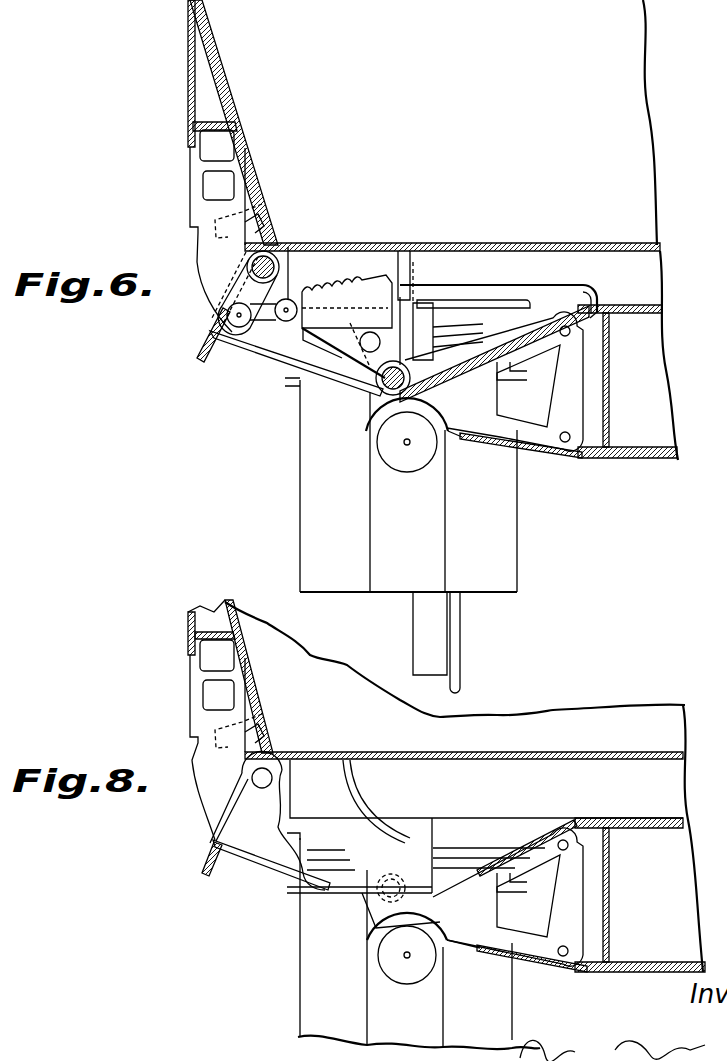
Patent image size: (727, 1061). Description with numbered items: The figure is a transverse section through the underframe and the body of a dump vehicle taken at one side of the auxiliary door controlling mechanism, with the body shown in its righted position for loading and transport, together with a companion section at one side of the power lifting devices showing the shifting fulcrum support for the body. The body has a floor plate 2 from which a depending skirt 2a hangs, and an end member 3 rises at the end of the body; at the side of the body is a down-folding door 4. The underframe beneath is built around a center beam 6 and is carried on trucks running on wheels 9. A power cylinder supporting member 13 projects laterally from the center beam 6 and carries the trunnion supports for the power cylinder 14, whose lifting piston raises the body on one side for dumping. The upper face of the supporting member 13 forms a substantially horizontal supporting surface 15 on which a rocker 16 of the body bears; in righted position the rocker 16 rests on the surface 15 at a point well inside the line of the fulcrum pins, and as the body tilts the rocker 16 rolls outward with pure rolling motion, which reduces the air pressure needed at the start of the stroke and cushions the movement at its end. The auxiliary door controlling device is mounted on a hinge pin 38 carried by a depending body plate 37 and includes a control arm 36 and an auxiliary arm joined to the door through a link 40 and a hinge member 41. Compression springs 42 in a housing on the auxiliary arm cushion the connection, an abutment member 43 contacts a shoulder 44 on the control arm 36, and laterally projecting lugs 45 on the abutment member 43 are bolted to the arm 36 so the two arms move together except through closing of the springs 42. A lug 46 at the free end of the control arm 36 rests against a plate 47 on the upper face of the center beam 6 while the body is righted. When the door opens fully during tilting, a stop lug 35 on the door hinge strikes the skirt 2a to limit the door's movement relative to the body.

In FIG. 6, the floor plate 2 is at (560, 243).
In FIG. 8, the floor plate 2 is at (519, 752).
In FIG. 6, the depending skirt 2a is at (205, 340).
In FIG. 8, the depending skirt 2a is at (210, 858).
In FIG. 6, the end member 3 is at (533, 122).
In FIG. 8, the end member 3 is at (464, 787).
In FIG. 6, the down-folding door 4 is at (225, 61).
In FIG. 8, the down-folding door 4 is at (235, 630).
In FIG. 6, the center beam 6 is at (616, 373).
In FIG. 8, the center beam 6 is at (611, 900).
In FIG. 6, the wheel 9 is at (436, 642).
In FIG. 6, the power cylinder supporting member 13 is at (494, 382).
In FIG. 8, the power cylinder supporting member 13 is at (510, 896).
In FIG. 6, the power cylinder 14 is at (498, 502).
In FIG. 8, the power cylinder 14 is at (313, 972).
In FIG. 8, the horizontal supporting surface 15 is at (366, 898).
In FIG. 6, the rocker 16 is at (313, 356).
In FIG. 8, the rocker 16 is at (376, 806).
In FIG. 6, the stop lug 35 is at (188, 232).
In FIG. 8, the stop lug 35 is at (190, 745).
In FIG. 6, the control arm 36 is at (492, 291).
In FIG. 6, the depending body plate 37 is at (303, 396).
In FIG. 8, the depending body plate 37 is at (283, 852).
In FIG. 6, the hinge pin 38 is at (376, 392).
In FIG. 6, the link 40 is at (258, 322).
In FIG. 6, the hinge member 41 is at (196, 250).
In FIG. 8, the hinge member 41 is at (208, 790).
In FIG. 6, the compression spring 42 is at (324, 285).
In FIG. 6, the abutment member 43 is at (381, 305).
In FIG. 6, the shoulder 44 is at (431, 247).
In FIG. 6, the laterally projecting lug 45 is at (409, 247).
In FIG. 6, the lug 46 is at (596, 297).
In FIG. 6, the plate 47 is at (642, 309).
In FIG. 8, the plate 47 is at (643, 818).